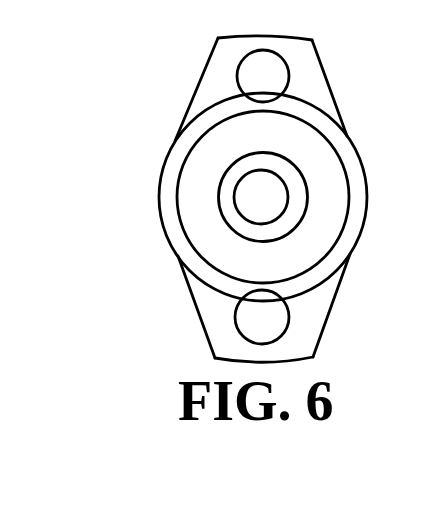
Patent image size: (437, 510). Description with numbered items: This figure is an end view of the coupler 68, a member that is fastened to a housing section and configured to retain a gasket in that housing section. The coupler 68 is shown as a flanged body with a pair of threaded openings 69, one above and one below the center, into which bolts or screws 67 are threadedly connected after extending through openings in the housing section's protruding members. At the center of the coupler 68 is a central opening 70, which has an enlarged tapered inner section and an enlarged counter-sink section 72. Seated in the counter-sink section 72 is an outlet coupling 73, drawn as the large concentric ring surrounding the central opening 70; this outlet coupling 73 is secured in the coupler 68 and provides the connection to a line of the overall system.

The bolts or screws 67 is at (278, 81).
The coupler 68 is at (340, 117).
The threaded openings 69 is at (236, 327).
The central opening 70 is at (240, 211).
The counter-sink section 72 is at (222, 180).
The outlet coupling 73 is at (359, 181).